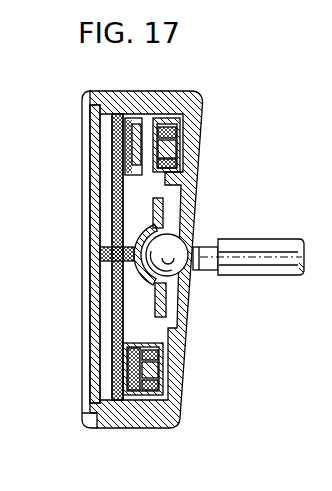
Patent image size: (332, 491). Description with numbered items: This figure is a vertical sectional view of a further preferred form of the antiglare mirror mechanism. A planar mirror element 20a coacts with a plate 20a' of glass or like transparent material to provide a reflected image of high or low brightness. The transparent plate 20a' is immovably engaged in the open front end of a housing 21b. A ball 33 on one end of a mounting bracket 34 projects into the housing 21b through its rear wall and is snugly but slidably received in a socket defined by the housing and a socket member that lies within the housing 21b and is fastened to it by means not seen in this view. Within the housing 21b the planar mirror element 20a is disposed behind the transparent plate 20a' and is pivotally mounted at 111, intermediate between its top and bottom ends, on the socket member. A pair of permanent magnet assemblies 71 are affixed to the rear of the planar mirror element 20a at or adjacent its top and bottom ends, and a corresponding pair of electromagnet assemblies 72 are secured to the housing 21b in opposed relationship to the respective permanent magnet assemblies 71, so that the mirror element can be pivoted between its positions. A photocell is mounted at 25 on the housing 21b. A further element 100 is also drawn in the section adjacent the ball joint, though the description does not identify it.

The housing 21b is at (86, 104).
The photocell mounting location 25 is at (78, 419).
The transparent plate 20a' is at (61, 254).
The planar mirror element 20a is at (72, 257).
The permanent magnet assemblies 71 is at (129, 120).
The electromagnet assemblies 72 is at (158, 120).
The pivot 111 is at (122, 254).
The socket spring 100 is at (163, 206).
The ball 33 is at (187, 284).
The mounting bracket 34 is at (274, 243).